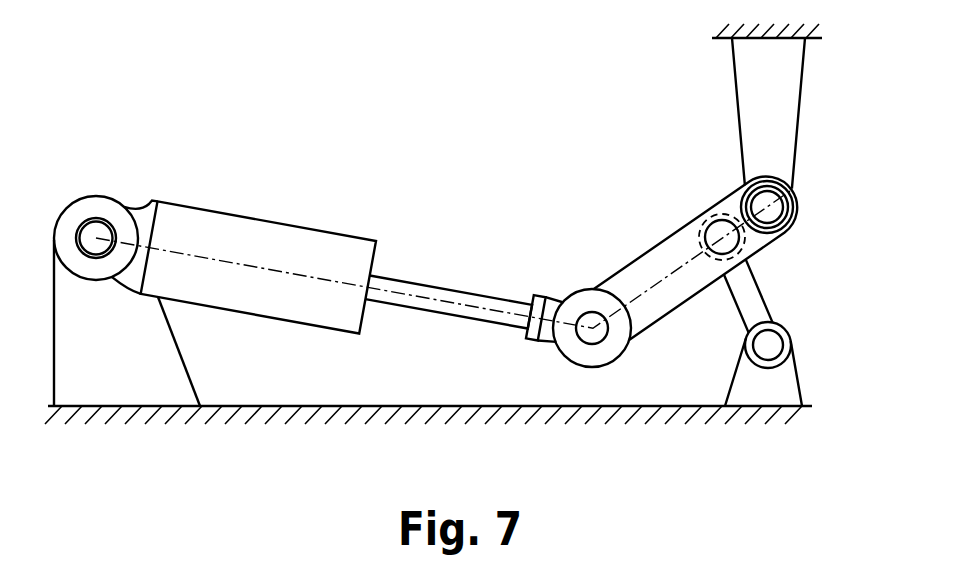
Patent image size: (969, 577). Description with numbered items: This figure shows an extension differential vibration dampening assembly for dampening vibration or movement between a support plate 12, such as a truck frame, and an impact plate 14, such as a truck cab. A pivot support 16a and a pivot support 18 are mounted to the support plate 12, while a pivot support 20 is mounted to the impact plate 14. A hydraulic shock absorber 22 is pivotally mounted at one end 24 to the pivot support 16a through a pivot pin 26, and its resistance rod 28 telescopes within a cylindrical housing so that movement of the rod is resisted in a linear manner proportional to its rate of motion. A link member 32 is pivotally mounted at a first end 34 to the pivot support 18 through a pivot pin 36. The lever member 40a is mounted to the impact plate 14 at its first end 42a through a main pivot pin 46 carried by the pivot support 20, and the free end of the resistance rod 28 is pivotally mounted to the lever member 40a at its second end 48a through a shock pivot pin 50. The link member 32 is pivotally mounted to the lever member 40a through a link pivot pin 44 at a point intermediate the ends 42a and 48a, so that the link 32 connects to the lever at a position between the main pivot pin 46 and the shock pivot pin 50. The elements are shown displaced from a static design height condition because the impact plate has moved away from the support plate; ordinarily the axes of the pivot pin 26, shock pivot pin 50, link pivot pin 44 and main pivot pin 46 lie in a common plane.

The support plate 12 is at (414, 404).
The impact plate 14 is at (725, 42).
The pivot support 16a is at (183, 360).
The pivot support 18 is at (733, 377).
The pivot support 20 is at (738, 113).
The hydraulic shock absorber 22 is at (277, 223).
The end of shock absorber 24 is at (142, 205).
The pivot pin 26 is at (95, 238).
The resistance rod 28 is at (472, 293).
The link member 32 is at (752, 290).
The first end of link member 34 is at (775, 322).
The pivot pin 36 is at (768, 347).
The lever member 40a is at (658, 303).
The first end of lever member 42a is at (795, 209).
The link pivot pin 44 is at (725, 238).
The main pivot pin 46 is at (781, 190).
The second end of lever member 48a is at (582, 292).
The shock pivot pin 50 is at (592, 328).